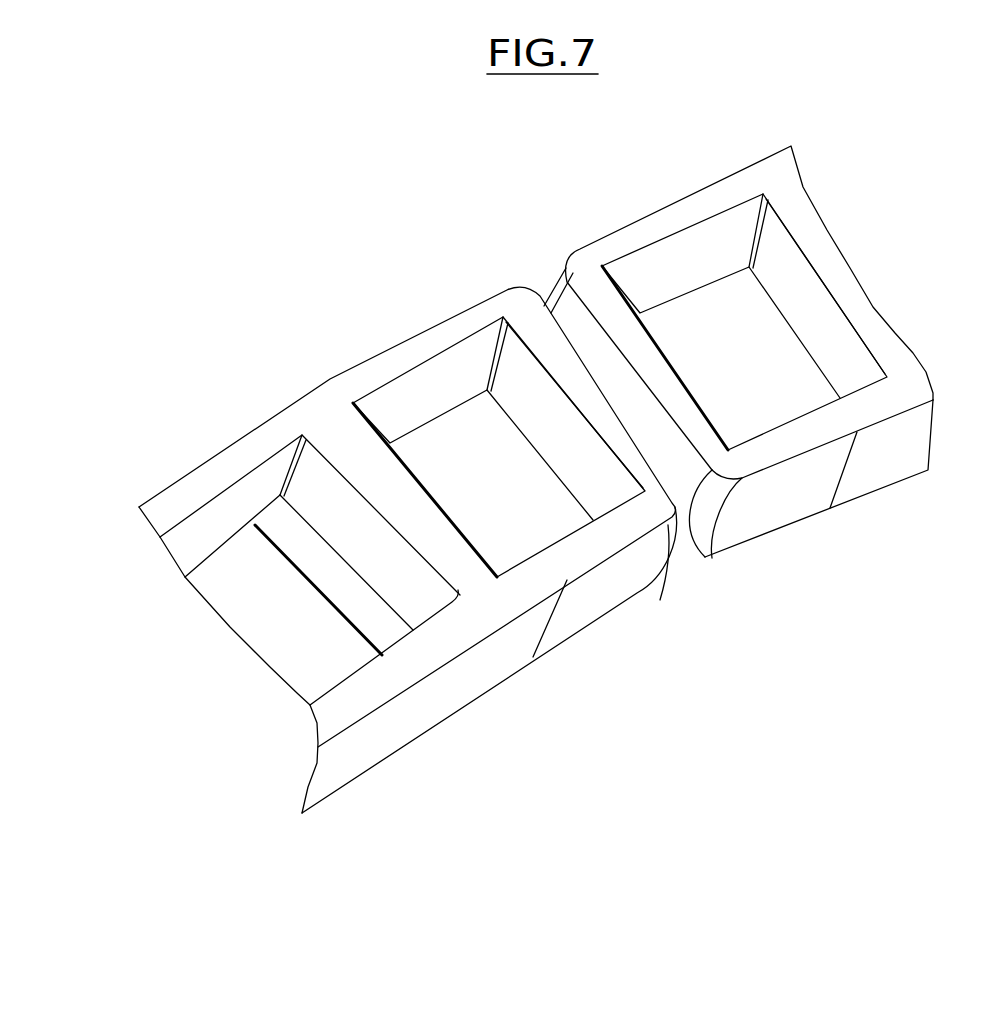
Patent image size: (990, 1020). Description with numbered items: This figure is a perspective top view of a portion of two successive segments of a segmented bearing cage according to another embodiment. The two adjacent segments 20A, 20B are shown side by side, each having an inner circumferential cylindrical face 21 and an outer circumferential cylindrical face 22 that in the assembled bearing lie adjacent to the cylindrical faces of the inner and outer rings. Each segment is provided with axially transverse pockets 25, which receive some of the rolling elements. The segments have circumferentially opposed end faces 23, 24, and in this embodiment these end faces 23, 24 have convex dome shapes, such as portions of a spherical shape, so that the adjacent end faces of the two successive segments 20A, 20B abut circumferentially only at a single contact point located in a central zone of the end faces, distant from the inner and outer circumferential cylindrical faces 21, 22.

The segment 20A is at (684, 197).
The segment 20B is at (419, 547).
The inner circumferential cylindrical face 21 is at (466, 674).
The outer circumferential cylindrical face 22 is at (229, 443).
The end face 23 is at (565, 328).
The end face 24 is at (686, 468).
The pocket 25 is at (435, 381).